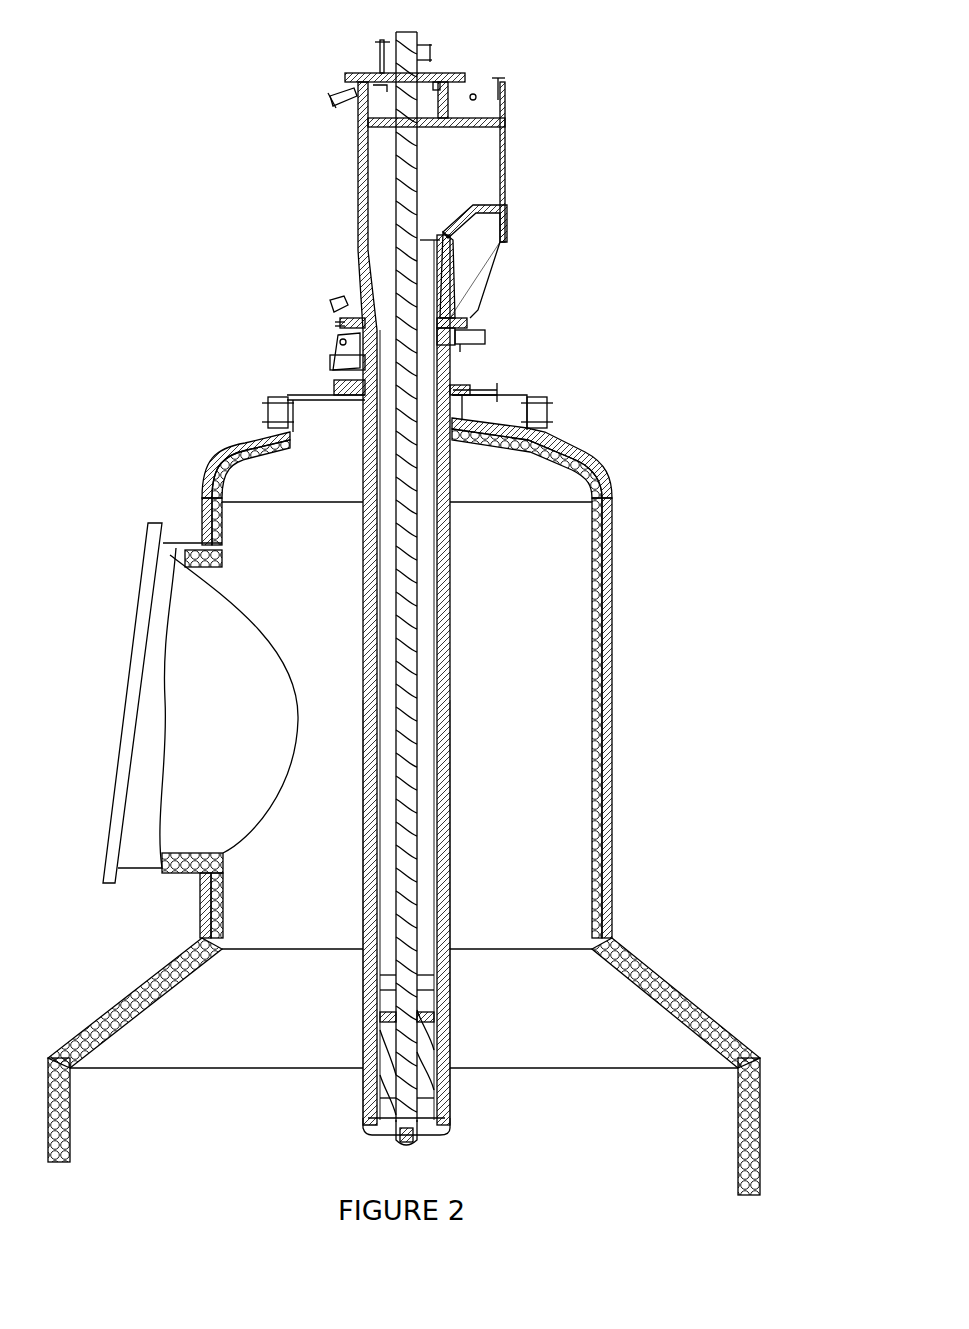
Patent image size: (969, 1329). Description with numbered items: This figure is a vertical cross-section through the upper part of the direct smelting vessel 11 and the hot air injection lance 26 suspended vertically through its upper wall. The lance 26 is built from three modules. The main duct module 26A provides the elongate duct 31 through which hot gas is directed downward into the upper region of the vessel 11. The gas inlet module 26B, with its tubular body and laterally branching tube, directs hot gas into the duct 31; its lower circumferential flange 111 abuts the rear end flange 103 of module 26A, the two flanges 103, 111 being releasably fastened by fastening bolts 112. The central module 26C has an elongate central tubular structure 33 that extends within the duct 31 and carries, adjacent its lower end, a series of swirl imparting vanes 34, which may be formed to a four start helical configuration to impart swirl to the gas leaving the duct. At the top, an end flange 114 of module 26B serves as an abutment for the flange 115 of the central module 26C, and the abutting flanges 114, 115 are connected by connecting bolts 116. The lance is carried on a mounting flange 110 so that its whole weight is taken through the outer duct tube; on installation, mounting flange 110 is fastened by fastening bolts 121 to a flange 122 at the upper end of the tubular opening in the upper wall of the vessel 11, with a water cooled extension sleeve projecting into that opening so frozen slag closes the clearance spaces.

The metallurgical vessel 11 is at (640, 708).
The hot air injection lance 26 is at (480, 527).
The main duct module 26A is at (445, 765).
The gas inlet module 26B is at (455, 287).
The central module 26C is at (413, 32).
The elongate duct 31 is at (430, 665).
The elongate central tubular structure 33 is at (415, 630).
The swirl imparting vanes 34 is at (427, 1053).
The rear end flange 103 is at (467, 327).
The mounting flange 110 is at (338, 388).
The circumferential flange 111 is at (458, 318).
The fastening bolts 112 is at (470, 318).
The end flange 114 is at (345, 83).
The flange 115 is at (447, 68).
The connecting bolts 116 is at (463, 70).
The fastening bolts 121 is at (468, 390).
The flange 122 is at (338, 388).